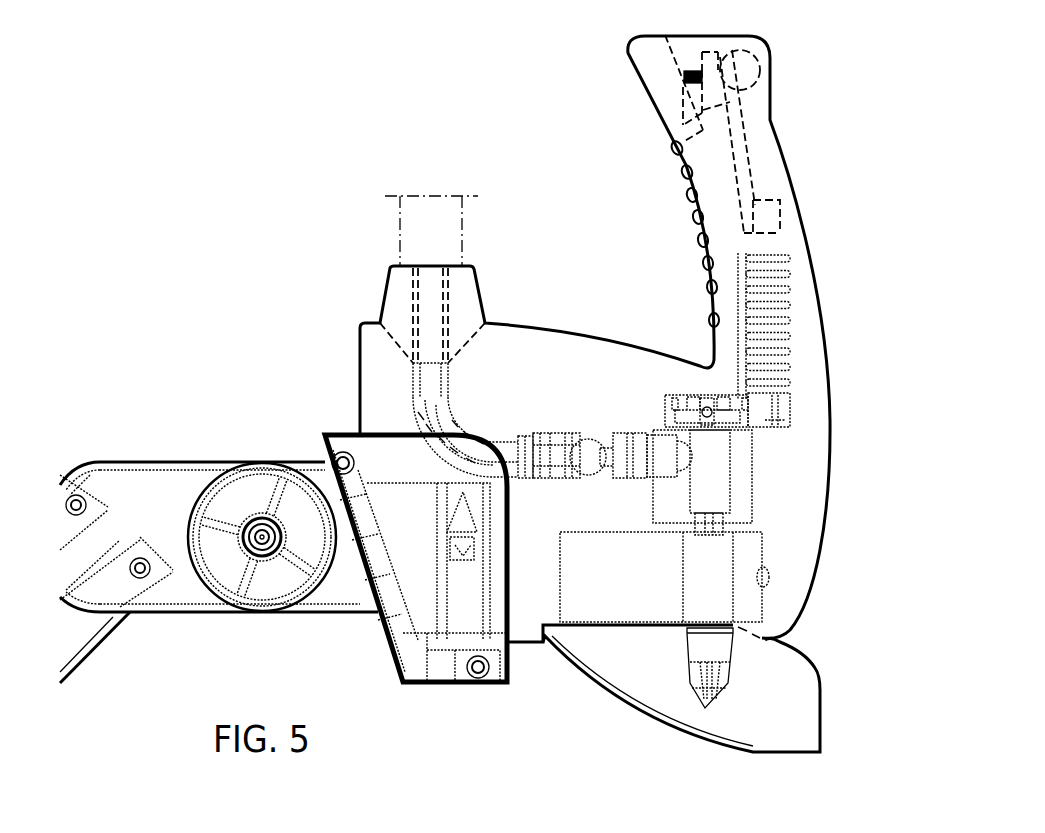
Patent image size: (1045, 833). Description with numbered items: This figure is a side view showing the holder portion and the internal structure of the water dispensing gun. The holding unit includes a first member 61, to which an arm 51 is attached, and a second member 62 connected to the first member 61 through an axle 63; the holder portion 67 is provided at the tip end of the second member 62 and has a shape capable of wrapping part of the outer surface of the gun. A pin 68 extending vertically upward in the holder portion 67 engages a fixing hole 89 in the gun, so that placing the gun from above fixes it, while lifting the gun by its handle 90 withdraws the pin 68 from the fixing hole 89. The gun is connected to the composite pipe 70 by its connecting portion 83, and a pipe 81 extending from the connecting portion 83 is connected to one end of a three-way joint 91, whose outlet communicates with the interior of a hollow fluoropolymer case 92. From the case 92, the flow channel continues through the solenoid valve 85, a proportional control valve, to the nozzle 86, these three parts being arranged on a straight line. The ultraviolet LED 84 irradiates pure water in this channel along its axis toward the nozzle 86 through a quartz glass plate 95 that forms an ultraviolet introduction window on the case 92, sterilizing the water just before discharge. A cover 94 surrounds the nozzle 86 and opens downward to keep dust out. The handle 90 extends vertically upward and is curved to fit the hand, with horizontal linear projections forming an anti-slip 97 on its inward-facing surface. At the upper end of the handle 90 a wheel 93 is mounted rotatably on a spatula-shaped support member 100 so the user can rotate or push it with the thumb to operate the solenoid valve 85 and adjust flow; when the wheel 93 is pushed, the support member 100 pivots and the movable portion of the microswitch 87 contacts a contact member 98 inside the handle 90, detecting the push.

The arm 51 is at (73, 653).
The first member 61 is at (158, 483).
The second member 62 is at (287, 490).
The axle 63 is at (258, 527).
The holder portion 67 is at (393, 640).
The pin 68 is at (463, 577).
The composite pipe 70 is at (470, 238).
The pipe 81 is at (410, 397).
The connecting portion 83 is at (388, 299).
The ultraviolet LED 84 is at (708, 412).
The solenoid valve 85 is at (760, 560).
The nozzle 86 is at (693, 683).
The microswitch 87 is at (703, 63).
The fixing hole 89 is at (465, 650).
The handle 90 is at (803, 250).
The three-way joint 91 is at (622, 443).
The case 92 is at (750, 478).
The wheel 93 is at (753, 63).
The cover 94 is at (815, 698).
The quartz glass plate 95 is at (750, 417).
The anti-slip 97 is at (665, 143).
The contact member 98 is at (683, 87).
The support member 100 is at (757, 163).